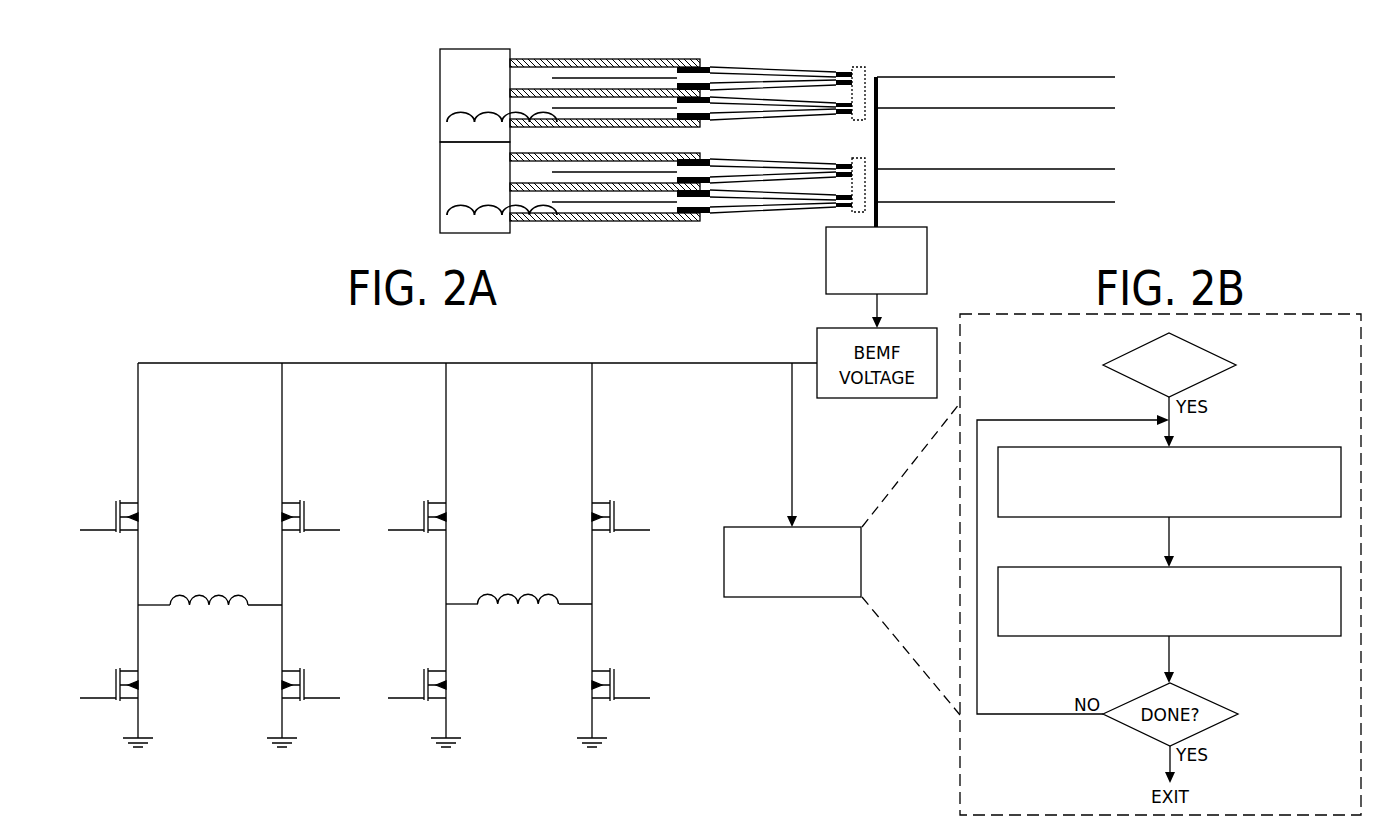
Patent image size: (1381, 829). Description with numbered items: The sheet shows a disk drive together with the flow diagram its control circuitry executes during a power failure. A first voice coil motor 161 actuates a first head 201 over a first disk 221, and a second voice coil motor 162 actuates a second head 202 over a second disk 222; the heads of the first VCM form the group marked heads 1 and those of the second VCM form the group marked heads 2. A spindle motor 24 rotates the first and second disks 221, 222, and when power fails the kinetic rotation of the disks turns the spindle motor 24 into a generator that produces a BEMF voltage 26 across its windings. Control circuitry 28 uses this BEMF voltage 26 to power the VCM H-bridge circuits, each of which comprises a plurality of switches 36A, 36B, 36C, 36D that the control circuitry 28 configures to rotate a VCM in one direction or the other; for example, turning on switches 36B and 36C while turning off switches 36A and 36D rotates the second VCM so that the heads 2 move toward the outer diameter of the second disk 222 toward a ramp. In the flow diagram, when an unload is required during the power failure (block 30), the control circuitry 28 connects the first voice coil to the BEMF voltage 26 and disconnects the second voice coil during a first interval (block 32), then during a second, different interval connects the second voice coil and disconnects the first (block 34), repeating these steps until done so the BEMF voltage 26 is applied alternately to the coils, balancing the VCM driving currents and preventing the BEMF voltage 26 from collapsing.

In FIG. 2A, the first voice coil motor (VCM) 161 is at (440, 56).
In FIG. 2A, the second voice coil motor (VCM) 162 is at (440, 151).
In FIG. 2A, the first head 201 is at (832, 62).
In FIG. 2A, the second head 202 is at (835, 155).
In FIG. 2A, the heads of the first VCM 1 is at (858, 83).
In FIG. 2A, the heads of the second VCM 2 is at (858, 176).
In FIG. 2A, the first disk 221 is at (1112, 66).
In FIG. 2A, the second disk 222 is at (1108, 161).
In FIG. 2A, the spindle motor 24 is at (928, 258).
In FIG. 2A, the back electromotive force (BEMF) voltage 26 is at (695, 363).
In FIG. 2A, the control circuitry 28 is at (794, 597).
In FIG. 2A, the switch 36A is at (416, 492).
In FIG. 2A, the switch 36B is at (623, 493).
In FIG. 2A, the switch 36C is at (417, 656).
In FIG. 2A, the switch 36D is at (622, 658).
In FIG. 2B, the unload block 30 is at (1213, 378).
In FIG. 2B, the first interval block 32 is at (1285, 518).
In FIG. 2B, the second interval block 34 is at (1285, 638).